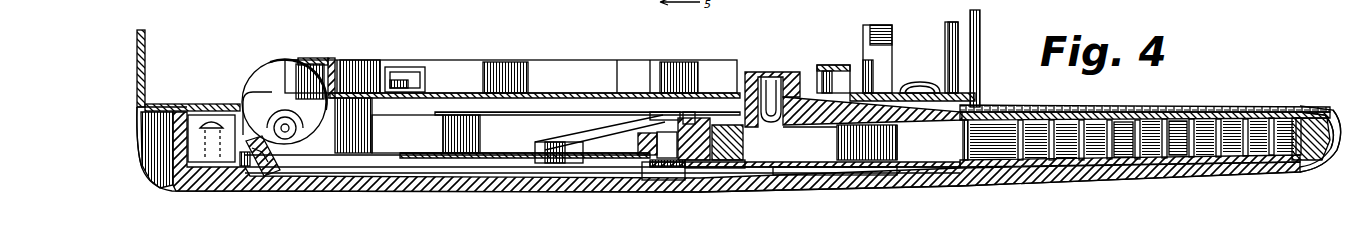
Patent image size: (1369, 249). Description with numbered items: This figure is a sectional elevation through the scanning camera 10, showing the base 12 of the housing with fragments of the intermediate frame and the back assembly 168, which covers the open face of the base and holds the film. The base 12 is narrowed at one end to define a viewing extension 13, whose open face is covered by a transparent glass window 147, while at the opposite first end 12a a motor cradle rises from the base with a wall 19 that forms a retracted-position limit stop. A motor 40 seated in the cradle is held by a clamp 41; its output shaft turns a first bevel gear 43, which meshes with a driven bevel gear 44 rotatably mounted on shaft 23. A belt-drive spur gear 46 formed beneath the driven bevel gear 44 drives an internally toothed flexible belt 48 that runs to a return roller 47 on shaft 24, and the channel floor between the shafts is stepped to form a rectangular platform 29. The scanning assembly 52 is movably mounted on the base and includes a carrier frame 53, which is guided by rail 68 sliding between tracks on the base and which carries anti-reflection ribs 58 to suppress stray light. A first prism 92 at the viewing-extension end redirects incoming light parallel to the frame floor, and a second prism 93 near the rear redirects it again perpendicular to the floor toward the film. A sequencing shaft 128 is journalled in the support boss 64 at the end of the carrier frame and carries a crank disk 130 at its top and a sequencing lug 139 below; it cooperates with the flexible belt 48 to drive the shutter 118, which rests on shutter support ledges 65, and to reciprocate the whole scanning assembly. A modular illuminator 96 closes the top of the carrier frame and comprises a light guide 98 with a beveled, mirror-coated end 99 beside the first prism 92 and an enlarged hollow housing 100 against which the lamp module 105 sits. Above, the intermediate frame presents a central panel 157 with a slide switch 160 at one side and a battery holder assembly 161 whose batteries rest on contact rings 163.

The scanning camera 10 is at (872, 112).
The base 12 is at (368, 203).
The first end 12a is at (148, 170).
The viewing extension 13 is at (1328, 146).
The wall 19 is at (333, 123).
The shaft 23 is at (284, 190).
The shaft 24 is at (762, 190).
The rectangular platform 29 is at (672, 190).
The motor 40 is at (312, 62).
The clamp 41 is at (259, 68).
The first bevel gear 43 is at (301, 104).
The driven bevel gear 44 is at (221, 186).
The belt-drive spur gear 46 is at (256, 186).
The return roller 47 is at (806, 190).
The flexible belt 48 is at (400, 140).
The scanning assembly 52 is at (1031, 116).
The carrier frame 53 is at (1096, 150).
The anti-reflection ribs 58 is at (1178, 132).
The sequencing-shaft support boss 64 is at (637, 148).
The shutter support ledges 65 is at (655, 116).
The rail 68 is at (535, 147).
The first prism 92 is at (1272, 116).
The second prism 93 is at (742, 148).
The modular illuminator 96 is at (841, 92).
The light guide 98 is at (986, 108).
The beveled end 99 is at (1310, 108).
The hollow housing 100 is at (745, 80).
The lamp module 105 is at (805, 47).
The shutter 118 is at (690, 114).
The sequencing shaft 128 is at (706, 190).
The crank disk 130 is at (640, 128).
The sequencing lug 139 is at (642, 195).
The transparent glass window 147 is at (1109, 116).
The central panel 157 is at (368, 72).
The slide switch 160 is at (404, 97).
The battery holder assembly 161 is at (892, 34).
The contact ring 163 is at (941, 80).
The back assembly 168 is at (137, 49).